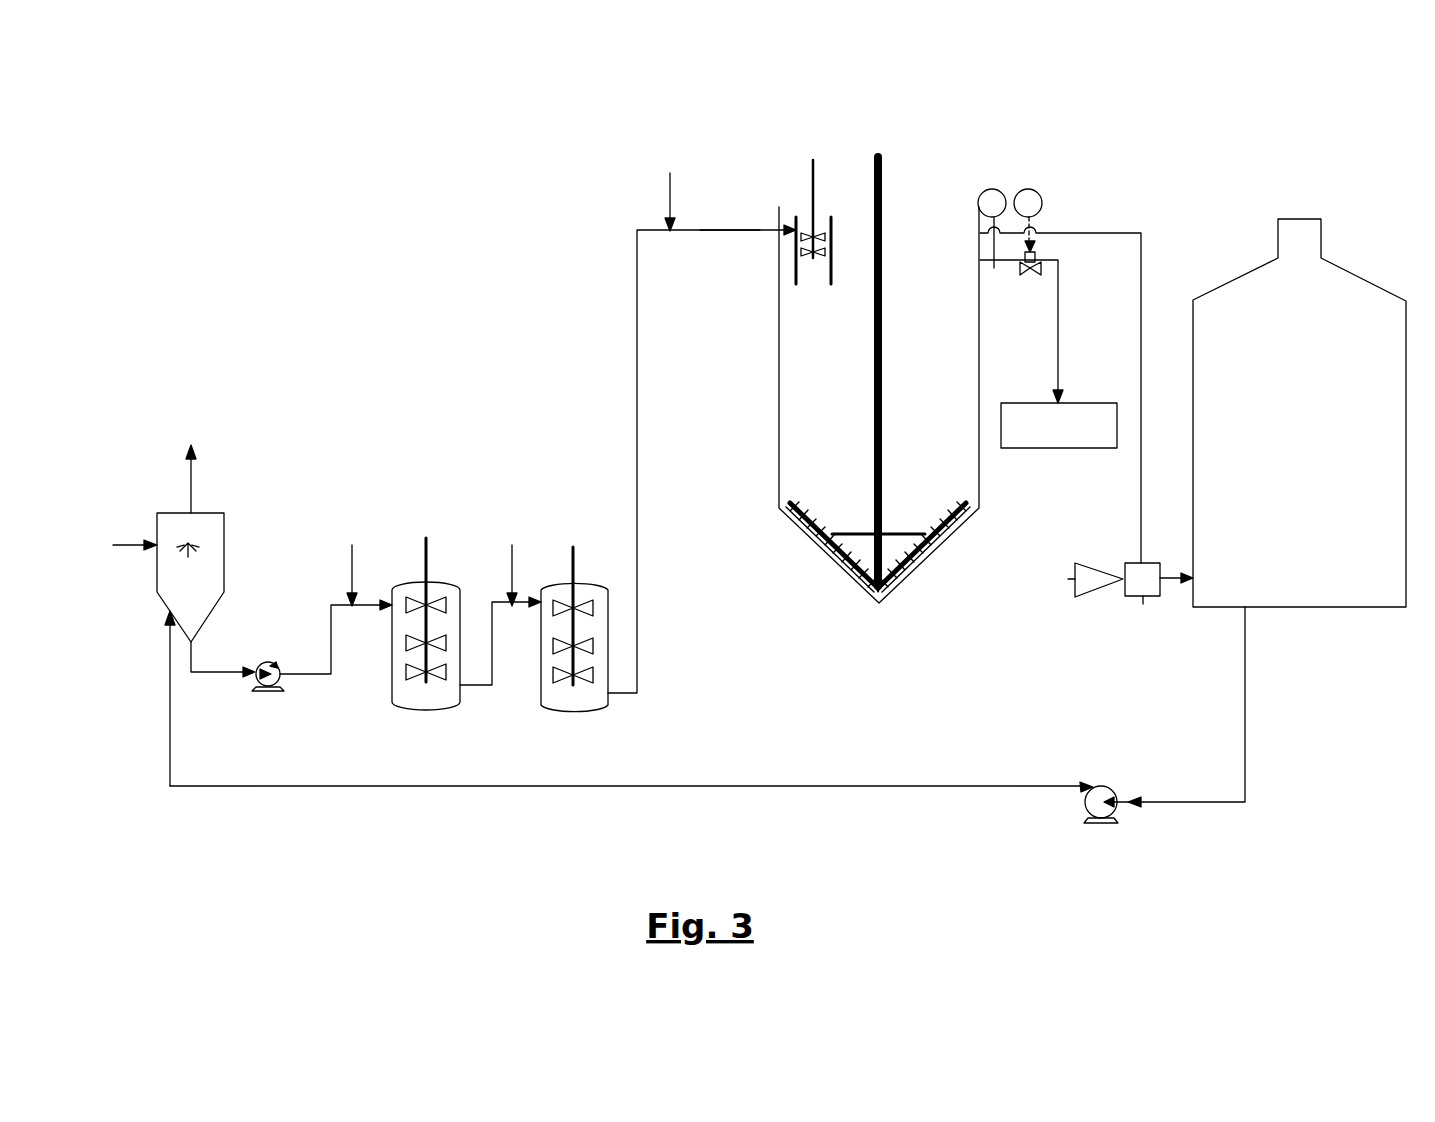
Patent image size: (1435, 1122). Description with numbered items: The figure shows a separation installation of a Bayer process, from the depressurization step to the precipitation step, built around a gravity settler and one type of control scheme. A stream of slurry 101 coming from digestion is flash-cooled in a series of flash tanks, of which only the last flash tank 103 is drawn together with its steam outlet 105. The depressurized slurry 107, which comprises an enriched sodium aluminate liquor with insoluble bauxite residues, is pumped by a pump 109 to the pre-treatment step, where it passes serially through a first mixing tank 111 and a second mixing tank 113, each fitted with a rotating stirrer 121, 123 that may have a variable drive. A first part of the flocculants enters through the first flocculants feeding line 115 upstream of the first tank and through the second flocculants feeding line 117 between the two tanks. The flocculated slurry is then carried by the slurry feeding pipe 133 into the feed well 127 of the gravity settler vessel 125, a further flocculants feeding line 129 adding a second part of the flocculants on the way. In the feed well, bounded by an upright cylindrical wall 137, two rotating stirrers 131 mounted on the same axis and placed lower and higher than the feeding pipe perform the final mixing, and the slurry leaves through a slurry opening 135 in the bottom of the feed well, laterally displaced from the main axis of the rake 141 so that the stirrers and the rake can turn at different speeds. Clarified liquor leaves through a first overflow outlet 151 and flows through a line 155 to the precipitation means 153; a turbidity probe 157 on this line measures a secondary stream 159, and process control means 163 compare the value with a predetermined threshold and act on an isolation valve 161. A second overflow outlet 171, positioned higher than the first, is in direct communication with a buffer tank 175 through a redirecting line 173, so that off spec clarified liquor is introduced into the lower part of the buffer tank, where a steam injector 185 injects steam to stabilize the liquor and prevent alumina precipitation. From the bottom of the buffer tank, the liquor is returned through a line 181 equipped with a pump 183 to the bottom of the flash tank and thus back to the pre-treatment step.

The slurry 101 is at (127, 542).
The flash tank 103 is at (224, 562).
The steam outlet 105 is at (191, 495).
The depressurized slurry 107 is at (200, 673).
The pump 109 is at (268, 689).
The first mixing tank 111 is at (428, 710).
The second mixing tank 113 is at (575, 712).
The first flocculants feeding line 115 is at (350, 573).
The second flocculants feeding line 117 is at (512, 570).
The rotating stirrer 121 is at (425, 555).
The rotating stirrer 123 is at (572, 557).
The gravity settler vessel 125 is at (778, 358).
The feed well 127 is at (829, 165).
The flocculants feeding line 129 is at (672, 200).
The rotating stirrers 131 is at (814, 200).
The slurry feeding pipe 133 is at (757, 230).
The slurry opening 135 is at (811, 295).
The upright cylindrical wall 137 is at (797, 266).
The rake 141 is at (835, 560).
The first overflow outlet 151 is at (996, 270).
The precipitation means 153 is at (1035, 448).
The line 155 is at (1058, 305).
The turbidity probe 157 is at (990, 189).
The secondary stream 159 is at (995, 250).
The isolation valve 161 is at (1040, 260).
The process control means 163 is at (1038, 189).
The second overflow outlet 171 is at (993, 237).
The redirecting line 173 is at (1142, 275).
The buffer tank 175 is at (1332, 607).
The line 181 is at (1244, 805).
The pump 183 is at (1092, 824).
The steam injector 185 is at (1112, 583).